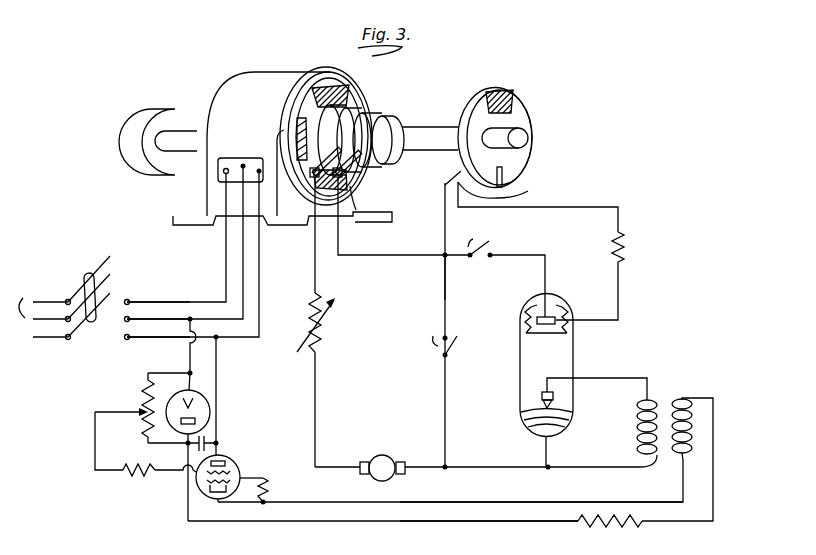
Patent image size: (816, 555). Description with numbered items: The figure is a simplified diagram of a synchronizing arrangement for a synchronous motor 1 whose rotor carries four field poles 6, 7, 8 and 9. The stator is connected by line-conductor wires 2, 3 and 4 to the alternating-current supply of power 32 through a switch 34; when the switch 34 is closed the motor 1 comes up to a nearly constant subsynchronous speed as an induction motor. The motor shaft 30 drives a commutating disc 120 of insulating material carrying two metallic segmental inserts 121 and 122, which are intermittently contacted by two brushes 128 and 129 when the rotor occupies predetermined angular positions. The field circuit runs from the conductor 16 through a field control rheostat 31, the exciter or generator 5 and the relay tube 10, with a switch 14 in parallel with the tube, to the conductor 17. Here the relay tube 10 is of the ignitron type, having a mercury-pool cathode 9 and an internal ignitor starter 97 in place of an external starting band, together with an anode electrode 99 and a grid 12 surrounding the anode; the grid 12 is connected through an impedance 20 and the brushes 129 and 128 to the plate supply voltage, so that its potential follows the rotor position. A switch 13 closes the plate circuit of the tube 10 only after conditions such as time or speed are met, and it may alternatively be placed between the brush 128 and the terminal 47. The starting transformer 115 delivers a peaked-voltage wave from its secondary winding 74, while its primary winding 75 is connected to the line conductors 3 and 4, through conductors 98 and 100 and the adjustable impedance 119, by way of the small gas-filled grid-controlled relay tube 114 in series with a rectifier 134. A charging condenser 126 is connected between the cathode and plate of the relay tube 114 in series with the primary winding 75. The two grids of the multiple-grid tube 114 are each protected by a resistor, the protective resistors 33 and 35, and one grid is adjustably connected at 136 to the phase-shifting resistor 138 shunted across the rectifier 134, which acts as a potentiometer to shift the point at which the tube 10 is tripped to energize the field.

The synchronous motor 1 is at (232, 82).
The line-conductor wire 2 is at (149, 302).
The line-conductor wire 3 is at (168, 318).
The line-conductor wire 4 is at (147, 340).
The generator (exciter) 5 is at (383, 456).
The field pole 6 is at (352, 99).
The field pole 7 is at (352, 178).
The field pole 8 is at (300, 187).
The field pole / mercury-pool cathode 9 is at (309, 80).
The field switch or relay tube 10 is at (521, 347).
The control grid 12 is at (569, 318).
The switch 13 is at (471, 235).
The switch 14 is at (432, 336).
The conductor 16 is at (313, 258).
The conductor 17 is at (342, 243).
The impedance 20 is at (624, 242).
The shaft 30 is at (418, 132).
The field control rheostat 31 is at (322, 331).
The alternating-current supply of power 32 is at (39, 305).
The protective resistor 33 is at (131, 480).
The switch 34 is at (84, 272).
The protective resistor 35 is at (268, 487).
The terminal 47 is at (443, 256).
The secondary winding 74 is at (638, 411).
The primary winding 75 is at (695, 421).
The internal ignitor starter 97 is at (542, 392).
The conductor 98 is at (446, 502).
The anode 99 is at (551, 315).
The conductor 100 is at (477, 525).
The gas-filled grid-controlled relay tube 114 is at (239, 466).
The transformer 115 is at (675, 404).
The adjustable impedance 119 is at (610, 533).
The commutating disc or wheel 120 is at (518, 112).
The segmental insert 121 is at (500, 90).
The segmental insert 122 is at (503, 176).
The charging condenser 126 is at (205, 442).
The brush 128 is at (447, 168).
The brush 129 is at (525, 195).
The rectifier 134 is at (208, 402).
The adjustable connection (phase shifter) 136 is at (139, 412).
The phase-shifting resistor 138 is at (145, 398).